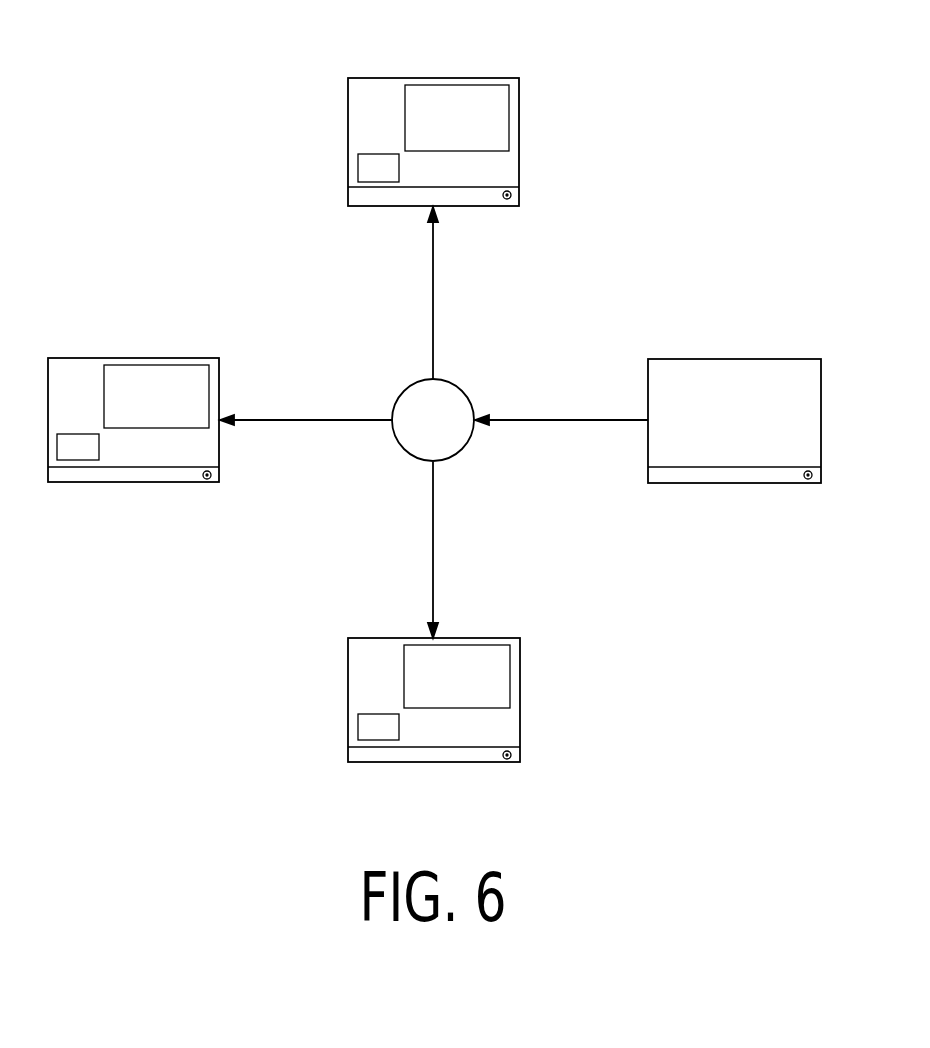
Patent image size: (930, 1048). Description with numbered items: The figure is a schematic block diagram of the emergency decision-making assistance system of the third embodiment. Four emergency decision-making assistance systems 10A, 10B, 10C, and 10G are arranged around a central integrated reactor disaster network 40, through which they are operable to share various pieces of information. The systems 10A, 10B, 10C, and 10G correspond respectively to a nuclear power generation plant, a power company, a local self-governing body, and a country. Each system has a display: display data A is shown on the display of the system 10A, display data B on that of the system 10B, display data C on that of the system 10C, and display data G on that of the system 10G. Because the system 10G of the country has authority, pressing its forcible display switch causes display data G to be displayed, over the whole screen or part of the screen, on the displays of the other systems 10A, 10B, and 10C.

The emergency decision-making assistance system 10A is at (424, 129).
The emergency decision-making assistance system 10B is at (125, 409).
The emergency decision-making assistance system 10C is at (424, 689).
The emergency decision-making assistance system 10G is at (726, 409).
The integrated reactor disaster network 40 is at (459, 389).